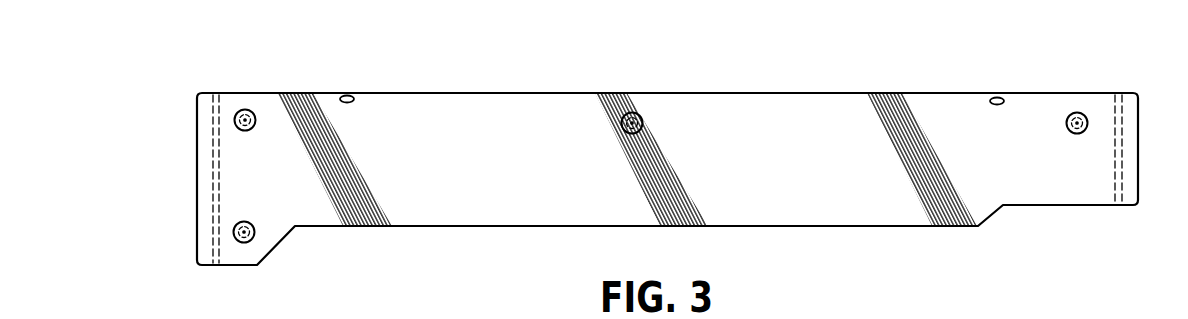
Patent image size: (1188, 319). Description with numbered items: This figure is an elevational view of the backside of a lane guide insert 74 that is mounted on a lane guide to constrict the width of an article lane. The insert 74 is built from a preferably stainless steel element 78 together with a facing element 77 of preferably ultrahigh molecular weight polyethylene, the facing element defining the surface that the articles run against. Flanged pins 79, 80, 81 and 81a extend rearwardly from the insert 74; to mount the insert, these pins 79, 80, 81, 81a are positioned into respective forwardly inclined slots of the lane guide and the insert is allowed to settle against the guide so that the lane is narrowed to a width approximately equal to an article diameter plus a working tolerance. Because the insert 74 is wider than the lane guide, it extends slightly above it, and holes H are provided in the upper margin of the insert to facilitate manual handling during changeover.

The lane guide insert 74 is at (524, 74).
The facing element 77 is at (208, 163).
The stainless steel element 78 is at (398, 108).
The flanged pin 79 is at (1067, 130).
The flanged pin 80 is at (643, 134).
The flanged pin 81 is at (252, 130).
The flanged pin 81a is at (244, 244).
The holes H is at (347, 95).